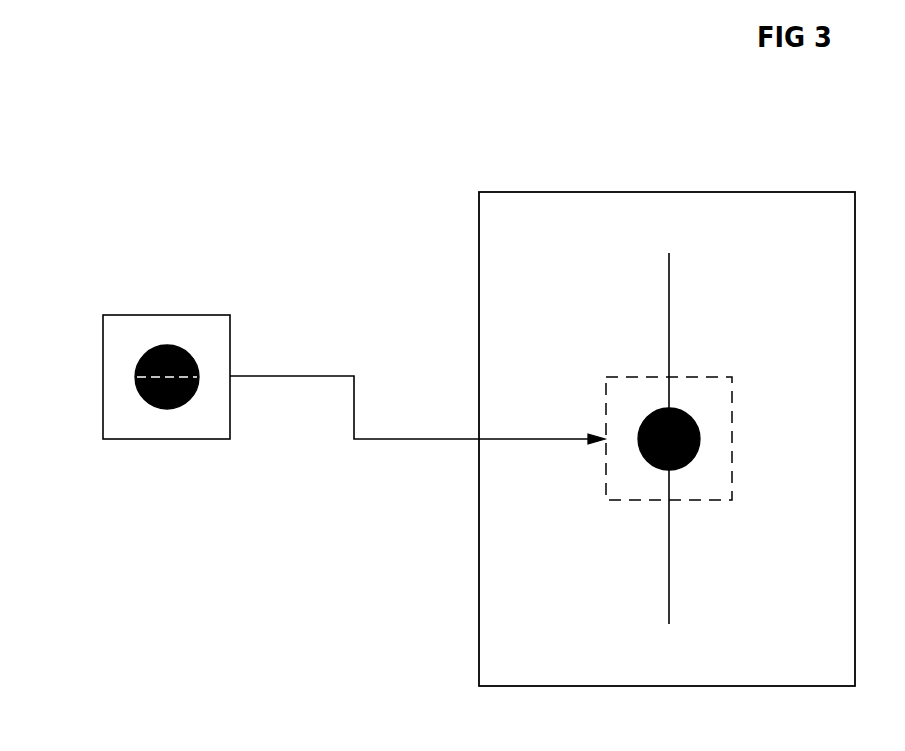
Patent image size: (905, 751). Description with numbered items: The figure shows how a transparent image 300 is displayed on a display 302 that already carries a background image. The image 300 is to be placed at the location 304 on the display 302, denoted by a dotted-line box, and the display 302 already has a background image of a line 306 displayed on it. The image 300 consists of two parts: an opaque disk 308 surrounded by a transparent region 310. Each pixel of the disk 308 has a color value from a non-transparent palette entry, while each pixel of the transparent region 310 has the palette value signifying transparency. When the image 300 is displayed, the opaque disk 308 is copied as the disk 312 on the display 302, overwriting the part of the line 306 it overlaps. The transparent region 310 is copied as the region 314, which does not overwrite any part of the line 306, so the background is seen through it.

The image 300 is at (103, 378).
The display 302 is at (479, 256).
The location 304 is at (715, 500).
The line 306 is at (670, 318).
The opaque disk 308 is at (165, 346).
The transparent region 310 is at (146, 430).
The disk 312 is at (700, 440).
The region 314 is at (648, 490).